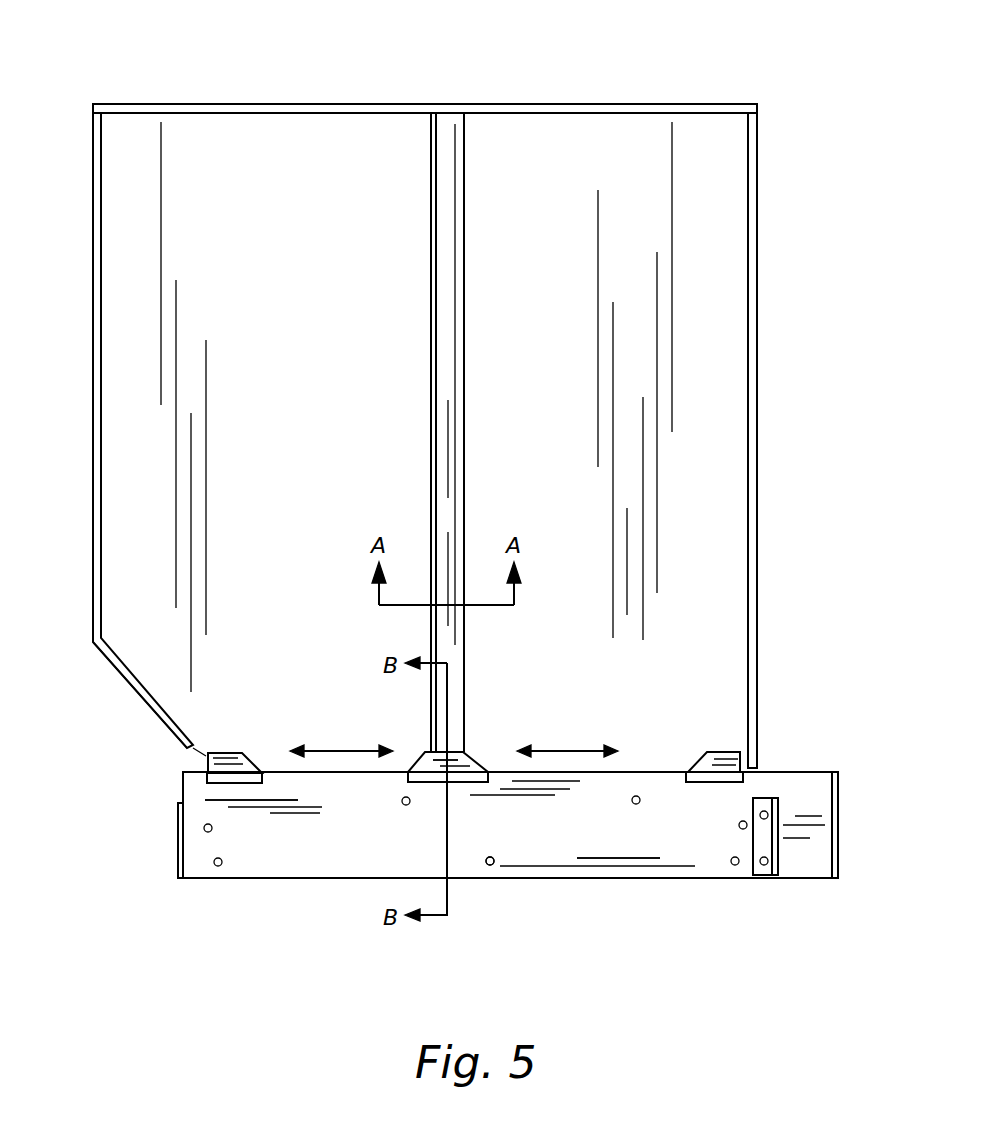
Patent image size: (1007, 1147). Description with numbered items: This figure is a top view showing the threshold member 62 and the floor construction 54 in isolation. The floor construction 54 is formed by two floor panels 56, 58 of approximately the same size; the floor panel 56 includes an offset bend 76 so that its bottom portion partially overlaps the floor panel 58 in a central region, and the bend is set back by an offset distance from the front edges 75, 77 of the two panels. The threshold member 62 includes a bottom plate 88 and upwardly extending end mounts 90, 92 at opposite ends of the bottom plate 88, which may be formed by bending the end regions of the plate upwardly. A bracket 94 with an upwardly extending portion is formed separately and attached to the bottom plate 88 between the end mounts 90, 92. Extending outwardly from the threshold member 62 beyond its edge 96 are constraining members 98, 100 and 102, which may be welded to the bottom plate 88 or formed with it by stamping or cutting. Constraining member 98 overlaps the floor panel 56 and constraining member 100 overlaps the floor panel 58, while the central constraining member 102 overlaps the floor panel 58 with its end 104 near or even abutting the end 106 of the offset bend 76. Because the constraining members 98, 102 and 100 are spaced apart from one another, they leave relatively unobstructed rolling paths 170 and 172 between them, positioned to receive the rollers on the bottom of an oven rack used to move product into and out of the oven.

The floor construction 54 is at (536, 152).
The floor panel 56 is at (230, 368).
The floor panel 58 is at (639, 349).
The offset bend 76 is at (442, 456).
The threshold member 62 is at (685, 845).
The end mount 90 is at (178, 843).
The end mount 92 is at (838, 806).
The bracket 94 is at (764, 874).
The front edge 75 is at (310, 772).
The bottom plate 88 is at (500, 830).
The front edge 77 is at (592, 773).
The constraining member 98 is at (244, 754).
The constraining member 100 is at (723, 762).
The constraining member 102 is at (473, 758).
The end of offset bend 106 is at (455, 757).
The end of constraining member 104 is at (448, 754).
The rolling path 170 is at (357, 705).
The rolling path 172 is at (563, 750).
The edge of threshold member 96 is at (657, 768).